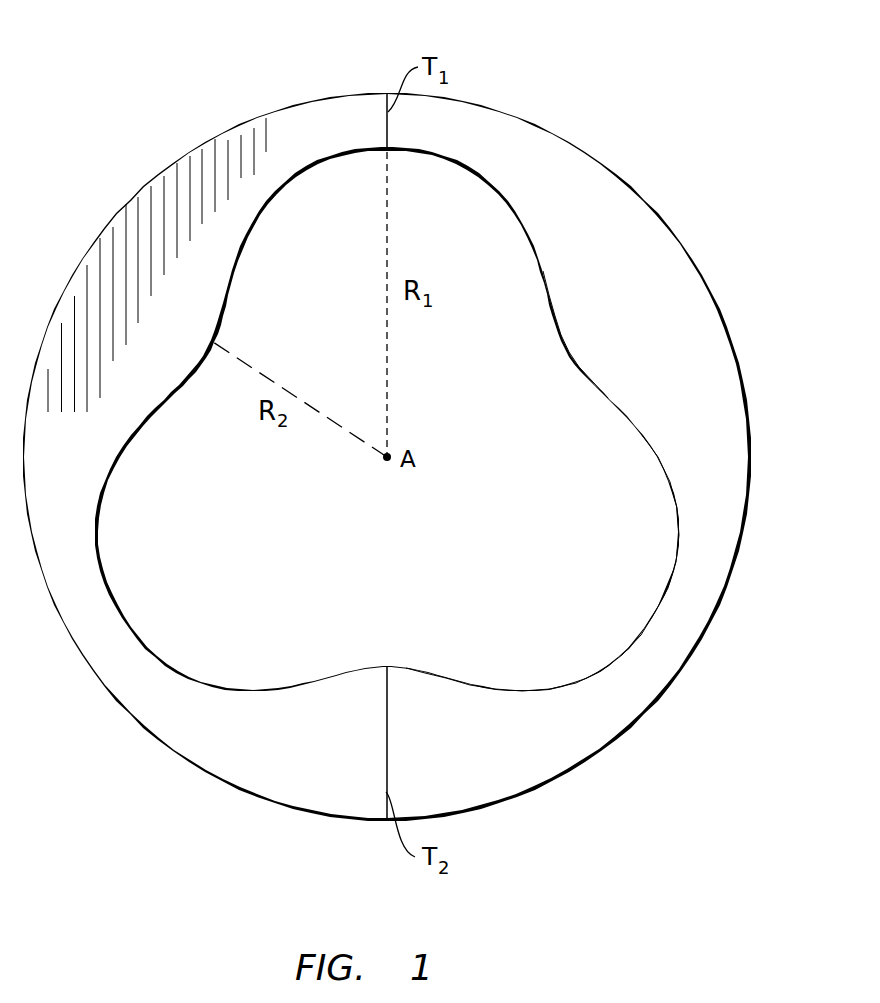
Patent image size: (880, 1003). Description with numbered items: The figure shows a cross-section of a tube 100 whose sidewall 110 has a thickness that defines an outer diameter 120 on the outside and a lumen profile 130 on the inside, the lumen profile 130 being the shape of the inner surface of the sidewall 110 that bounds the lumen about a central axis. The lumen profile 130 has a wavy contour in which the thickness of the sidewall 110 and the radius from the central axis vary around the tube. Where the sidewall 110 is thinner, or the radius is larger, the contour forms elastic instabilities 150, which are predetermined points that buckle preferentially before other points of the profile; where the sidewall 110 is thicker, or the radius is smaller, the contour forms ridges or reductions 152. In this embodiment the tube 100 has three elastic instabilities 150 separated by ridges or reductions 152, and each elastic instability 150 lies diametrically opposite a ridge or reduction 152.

The tube 100 is at (430, 419).
The sidewall 110 is at (430, 457).
The outer diameter 120 is at (757, 537).
The lumen profile 130 is at (668, 537).
The elastic instabilities 150 is at (643, 633).
The ridges or reductions 152 is at (555, 320).